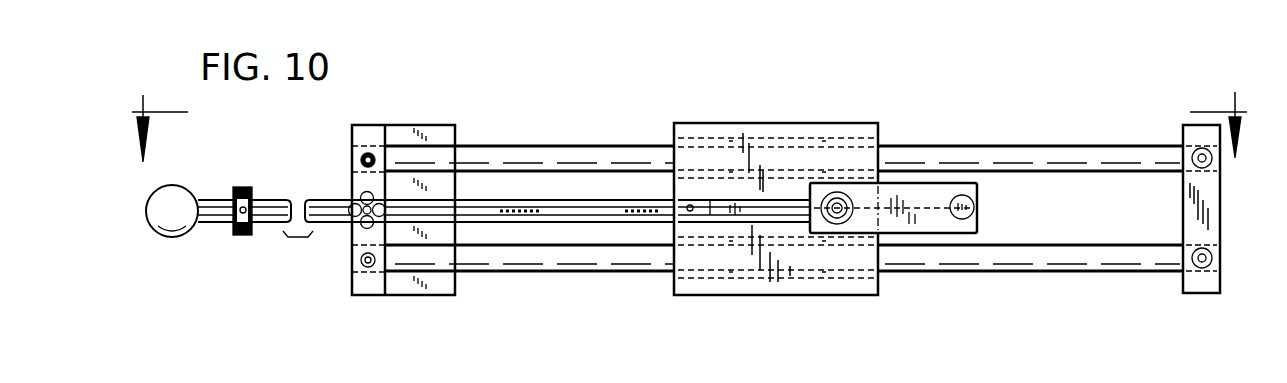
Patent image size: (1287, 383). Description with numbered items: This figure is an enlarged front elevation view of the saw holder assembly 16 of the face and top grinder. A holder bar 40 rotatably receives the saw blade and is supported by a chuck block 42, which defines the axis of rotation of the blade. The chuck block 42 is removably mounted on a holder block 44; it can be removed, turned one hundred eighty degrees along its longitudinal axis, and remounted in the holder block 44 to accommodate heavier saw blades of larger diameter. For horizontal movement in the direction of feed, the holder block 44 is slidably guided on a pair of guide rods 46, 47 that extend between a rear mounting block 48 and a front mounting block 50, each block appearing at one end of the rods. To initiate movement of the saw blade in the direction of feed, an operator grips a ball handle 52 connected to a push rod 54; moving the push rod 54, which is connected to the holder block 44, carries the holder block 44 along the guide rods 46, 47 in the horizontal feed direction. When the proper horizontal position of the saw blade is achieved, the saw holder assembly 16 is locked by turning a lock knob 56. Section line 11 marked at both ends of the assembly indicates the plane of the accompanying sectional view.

The section line 11- 11 is at (692, 121).
The saw holder assembly 16 is at (918, 315).
The holder bar 40 is at (978, 193).
The chuck block 42 is at (897, 183).
The holder block 44 is at (752, 123).
The guide rod 46 is at (1032, 146).
The guide rod 47 is at (1043, 271).
The rear mounting block 48 is at (370, 125).
The front mounting block 50 is at (1220, 185).
The ball handle 52 is at (173, 186).
The push rod 54 is at (607, 222).
The lock knob 56 is at (360, 198).